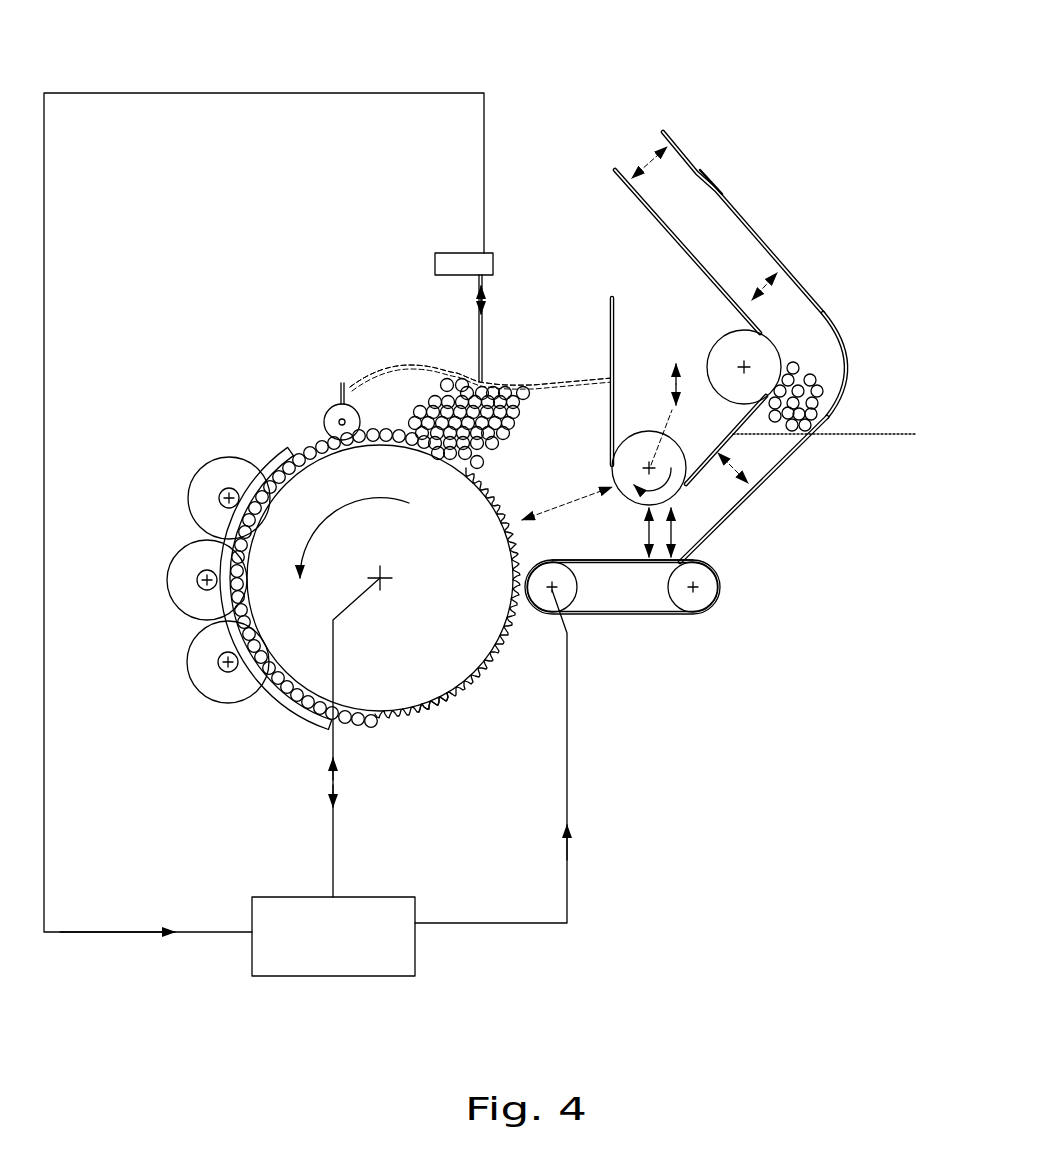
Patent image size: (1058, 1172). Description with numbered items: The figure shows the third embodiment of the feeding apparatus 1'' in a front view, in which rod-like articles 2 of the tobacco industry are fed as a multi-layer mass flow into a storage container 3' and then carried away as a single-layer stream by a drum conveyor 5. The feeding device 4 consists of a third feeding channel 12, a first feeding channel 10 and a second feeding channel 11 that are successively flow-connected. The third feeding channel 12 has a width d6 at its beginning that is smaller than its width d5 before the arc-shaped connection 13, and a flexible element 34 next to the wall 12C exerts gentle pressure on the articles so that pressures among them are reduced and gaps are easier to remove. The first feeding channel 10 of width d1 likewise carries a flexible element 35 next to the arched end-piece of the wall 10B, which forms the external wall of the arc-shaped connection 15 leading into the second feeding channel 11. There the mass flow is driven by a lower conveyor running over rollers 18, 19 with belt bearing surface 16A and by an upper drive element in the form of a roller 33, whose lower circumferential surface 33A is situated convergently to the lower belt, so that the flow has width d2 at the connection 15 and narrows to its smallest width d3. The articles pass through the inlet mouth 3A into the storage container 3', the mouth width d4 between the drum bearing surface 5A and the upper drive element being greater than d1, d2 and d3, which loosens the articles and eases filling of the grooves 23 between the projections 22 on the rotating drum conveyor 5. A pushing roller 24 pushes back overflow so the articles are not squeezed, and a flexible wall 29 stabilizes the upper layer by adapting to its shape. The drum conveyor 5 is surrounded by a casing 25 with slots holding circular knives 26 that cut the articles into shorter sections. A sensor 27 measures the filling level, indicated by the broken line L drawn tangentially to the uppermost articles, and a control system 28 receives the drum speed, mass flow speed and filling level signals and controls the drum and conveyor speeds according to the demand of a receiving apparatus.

The feeding apparatus 1'' is at (264, 512).
The rod-like articles 2 is at (452, 368).
The storage container 3' is at (452, 262).
The inlet mouth 3A is at (589, 467).
The feeding device 4 is at (763, 140).
The drum conveyor 5 is at (312, 663).
The bearing surface 5A is at (460, 708).
The first feeding channel 10 is at (788, 483).
The arched end-piece of the wall 10B is at (818, 397).
The second feeding channel 11 is at (597, 570).
The third feeding channel 12 is at (705, 155).
The wall 12C is at (777, 265).
The connection 13 is at (852, 342).
The connection 15 is at (722, 562).
The bearing surface 16A is at (623, 567).
The roller 18 is at (550, 597).
The roller 19 is at (705, 595).
The projections 22 is at (432, 712).
The grooves 23 is at (408, 717).
The pushing roller 24 is at (332, 402).
The casing 25 is at (277, 460).
The circular knives 26 is at (170, 547).
The sensor 27 is at (464, 262).
The control system 28 is at (360, 952).
The flexible wall 29 is at (375, 357).
The roller 33 is at (633, 450).
The circumferential surface 33A is at (680, 492).
The flexible element 34 is at (715, 186).
The flexible element 35 is at (826, 417).
The filling level line L is at (502, 382).
The width of the first feeding channel d1 is at (747, 458).
The inlet width d2 is at (694, 532).
The outlet width d3 is at (625, 532).
The width of the inlet mouth d4 is at (567, 491).
The width of the third feeding channel d5 is at (752, 273).
The width of the third feeding channel d6 is at (641, 149).